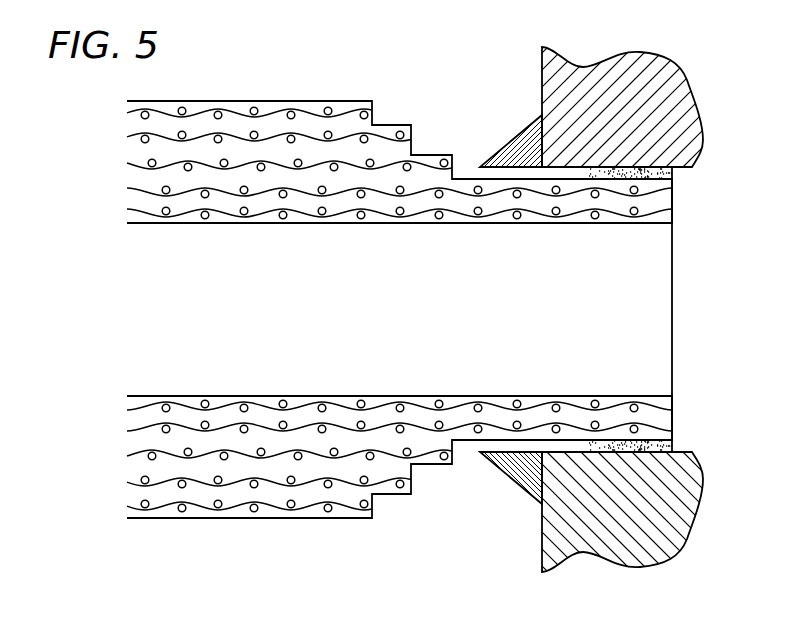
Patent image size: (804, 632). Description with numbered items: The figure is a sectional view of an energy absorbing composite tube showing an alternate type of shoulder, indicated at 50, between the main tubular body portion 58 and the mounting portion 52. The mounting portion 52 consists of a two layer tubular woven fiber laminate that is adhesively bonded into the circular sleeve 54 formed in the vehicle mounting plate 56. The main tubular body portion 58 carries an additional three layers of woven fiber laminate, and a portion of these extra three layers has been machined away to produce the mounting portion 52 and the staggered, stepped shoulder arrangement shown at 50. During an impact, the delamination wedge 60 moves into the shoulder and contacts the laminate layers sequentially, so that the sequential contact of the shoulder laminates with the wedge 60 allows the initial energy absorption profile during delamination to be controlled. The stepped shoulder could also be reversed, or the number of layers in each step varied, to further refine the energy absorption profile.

The shoulder configuration 50 is at (438, 90).
The mounting portion 52 is at (642, 198).
The circular sleeve 54 is at (663, 450).
The vehicle mounting plate 56 is at (645, 527).
The main tubular body portion 58 is at (232, 518).
The delamination wedge 60 is at (513, 142).